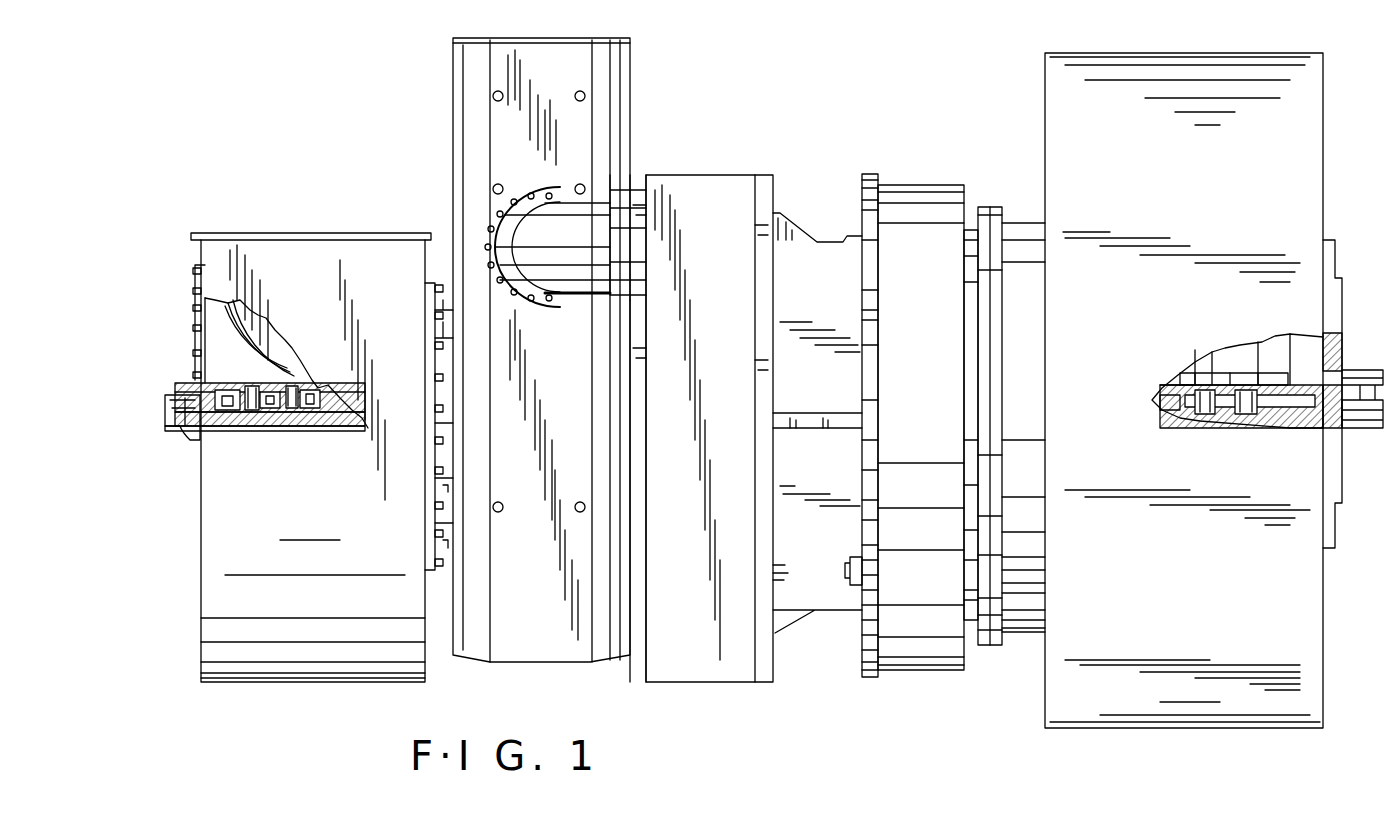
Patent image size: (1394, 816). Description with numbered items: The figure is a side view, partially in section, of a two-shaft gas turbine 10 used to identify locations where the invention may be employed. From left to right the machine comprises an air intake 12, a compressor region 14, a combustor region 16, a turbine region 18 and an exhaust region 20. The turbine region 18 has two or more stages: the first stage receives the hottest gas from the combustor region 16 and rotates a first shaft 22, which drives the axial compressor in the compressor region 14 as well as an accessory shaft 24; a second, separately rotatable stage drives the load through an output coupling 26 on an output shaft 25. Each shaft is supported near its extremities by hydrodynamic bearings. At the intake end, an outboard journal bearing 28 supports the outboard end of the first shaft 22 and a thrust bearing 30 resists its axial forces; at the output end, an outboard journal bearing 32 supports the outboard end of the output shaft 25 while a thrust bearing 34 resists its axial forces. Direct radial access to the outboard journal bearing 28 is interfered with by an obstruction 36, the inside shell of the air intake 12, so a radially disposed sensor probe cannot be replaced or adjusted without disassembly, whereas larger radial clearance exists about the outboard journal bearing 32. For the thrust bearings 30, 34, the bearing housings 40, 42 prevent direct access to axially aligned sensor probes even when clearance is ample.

The gas turbine 10 is at (808, 88).
The air intake 12 is at (278, 222).
The compressor region 14 is at (430, 150).
The combustor region 16 is at (675, 165).
The turbine region 18 is at (875, 158).
The exhaust region 20 is at (1252, 22).
The first shaft 22 is at (340, 425).
The accessory shaft 24 is at (190, 440).
The output shaft 25 is at (1190, 400).
The output coupling 26 is at (1312, 365).
The outboard journal bearing 28 is at (300, 415).
The thrust bearing 30 is at (267, 428).
The outboard journal bearing 32 is at (1215, 420).
The thrust bearing 34 is at (1245, 425).
The obstruction 36 is at (262, 364).
The bearing housing 40 is at (297, 390).
The bearing housing 42 is at (1240, 360).